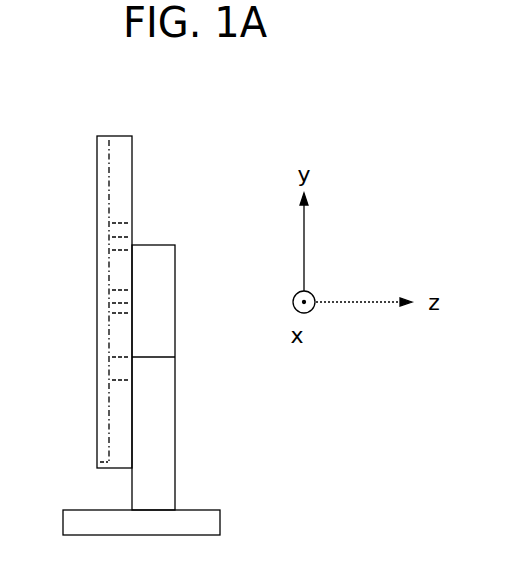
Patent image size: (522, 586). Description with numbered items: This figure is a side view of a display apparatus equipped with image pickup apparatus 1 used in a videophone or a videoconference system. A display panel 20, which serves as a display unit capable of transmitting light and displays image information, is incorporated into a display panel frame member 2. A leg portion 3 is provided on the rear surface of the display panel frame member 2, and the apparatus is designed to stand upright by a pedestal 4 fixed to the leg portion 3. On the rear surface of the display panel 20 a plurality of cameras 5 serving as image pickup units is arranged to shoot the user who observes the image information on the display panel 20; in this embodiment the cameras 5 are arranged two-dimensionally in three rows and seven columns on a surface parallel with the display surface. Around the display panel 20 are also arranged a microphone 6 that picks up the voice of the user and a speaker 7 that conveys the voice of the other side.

The display apparatus equipped with image pickup apparatus 1 is at (160, 112).
The display panel frame member 2 is at (103, 147).
The display panel 20 is at (108, 198).
The leg portion 3 is at (168, 295).
The pedestal 4 is at (205, 510).
The cameras 5 is at (133, 239).
The microphone 6 is at (97, 465).
The speaker 7 is at (100, 304).